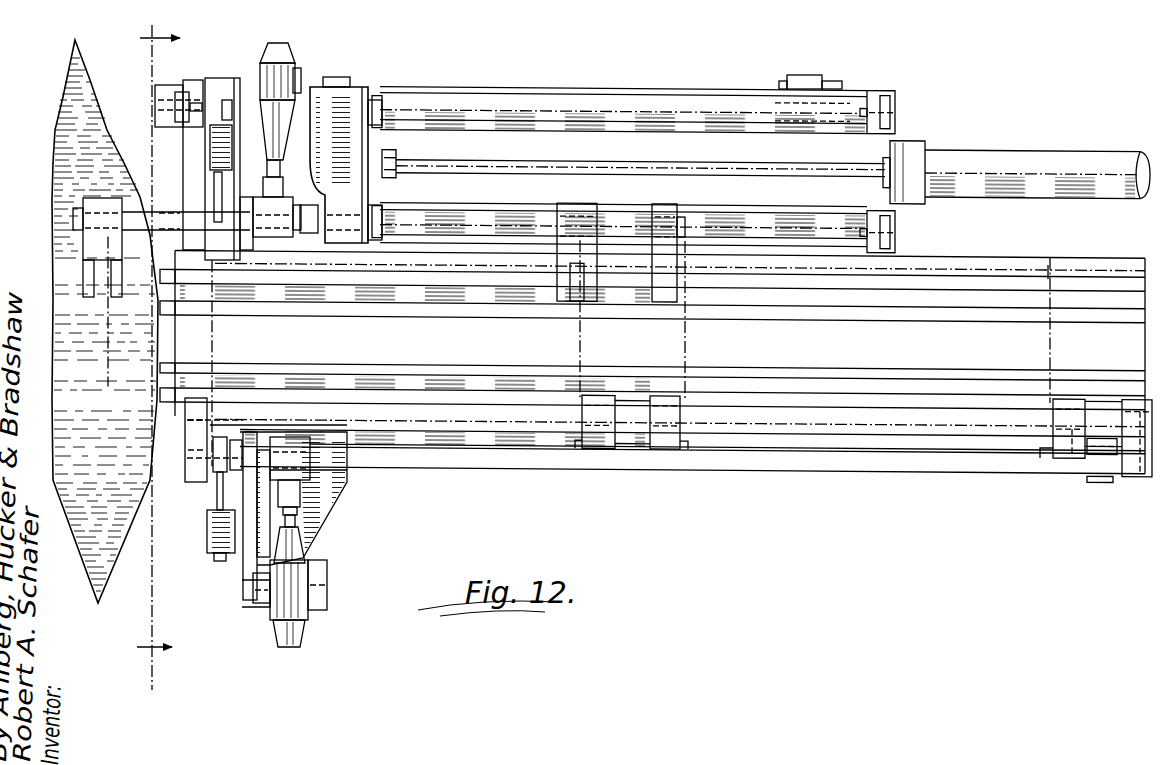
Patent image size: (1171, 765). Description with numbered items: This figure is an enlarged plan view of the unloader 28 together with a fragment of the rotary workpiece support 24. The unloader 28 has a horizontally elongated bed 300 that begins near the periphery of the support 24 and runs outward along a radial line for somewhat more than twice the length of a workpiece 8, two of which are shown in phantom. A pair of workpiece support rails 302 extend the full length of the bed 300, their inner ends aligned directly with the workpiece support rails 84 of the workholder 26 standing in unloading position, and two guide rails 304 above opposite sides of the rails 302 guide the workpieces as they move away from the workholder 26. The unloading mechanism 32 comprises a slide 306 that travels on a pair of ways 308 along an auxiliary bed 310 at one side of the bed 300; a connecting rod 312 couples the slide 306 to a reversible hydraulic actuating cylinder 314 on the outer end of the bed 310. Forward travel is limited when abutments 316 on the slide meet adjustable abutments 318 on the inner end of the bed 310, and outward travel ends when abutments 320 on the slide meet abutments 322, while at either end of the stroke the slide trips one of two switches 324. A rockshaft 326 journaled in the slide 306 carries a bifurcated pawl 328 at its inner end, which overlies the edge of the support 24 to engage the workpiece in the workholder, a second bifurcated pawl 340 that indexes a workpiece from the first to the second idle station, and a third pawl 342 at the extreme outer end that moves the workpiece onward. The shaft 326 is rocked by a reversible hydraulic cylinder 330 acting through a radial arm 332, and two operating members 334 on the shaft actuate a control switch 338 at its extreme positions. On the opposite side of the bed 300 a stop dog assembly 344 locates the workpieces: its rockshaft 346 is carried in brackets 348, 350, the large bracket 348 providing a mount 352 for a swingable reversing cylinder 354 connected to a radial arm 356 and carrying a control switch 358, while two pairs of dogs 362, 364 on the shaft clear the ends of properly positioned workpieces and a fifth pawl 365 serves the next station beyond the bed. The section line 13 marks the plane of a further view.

The workpiece 8 is at (106, 338).
The section line 13- 13 is at (158, 346).
The rotary workpiece support 24 is at (86, 101).
The workholder 26 is at (70, 214).
The unloader 28 is at (388, 478).
The unloading mechanism 32 is at (380, 74).
The workpiece support rails 84 is at (137, 305).
The bed 300 is at (1035, 257).
The workpiece support rails 302 is at (613, 308).
The guide rails 304 is at (207, 279).
The slide 306 is at (343, 97).
The ways 308 is at (597, 59).
The auxiliary bed 310 is at (653, 90).
The connecting rod 312 is at (527, 172).
The reversible hydraulic actuating cylinder 314 is at (1018, 146).
The abutments 316 is at (192, 95).
The adjustable abutments 318 is at (195, 104).
The abutments 320 is at (382, 103).
The abutments 322 is at (897, 106).
The switches 324 is at (262, 70).
The rockshaft 326 is at (296, 250).
The bifurcated pawl 328 is at (93, 243).
The reversible hydraulic cylinder 330 is at (298, 66).
The radial arm 332 is at (282, 208).
The operating members 334 is at (213, 212).
The control switch 338 is at (212, 149).
The second bifurcated pawl 340 is at (573, 207).
The third pawl 342 is at (670, 208).
The stop dog assembly 344 is at (521, 475).
The rockshaft 346 is at (841, 466).
The bracket 348 is at (318, 522).
The bracket 350 is at (1100, 469).
The mount 352 is at (328, 600).
The swingable reversing cylinder 354 is at (300, 632).
The radial arm 356 is at (314, 458).
The control switch 358 is at (210, 535).
The dogs 362 is at (198, 455).
The dogs 364 is at (662, 445).
The fifth pawl 365 is at (1130, 439).